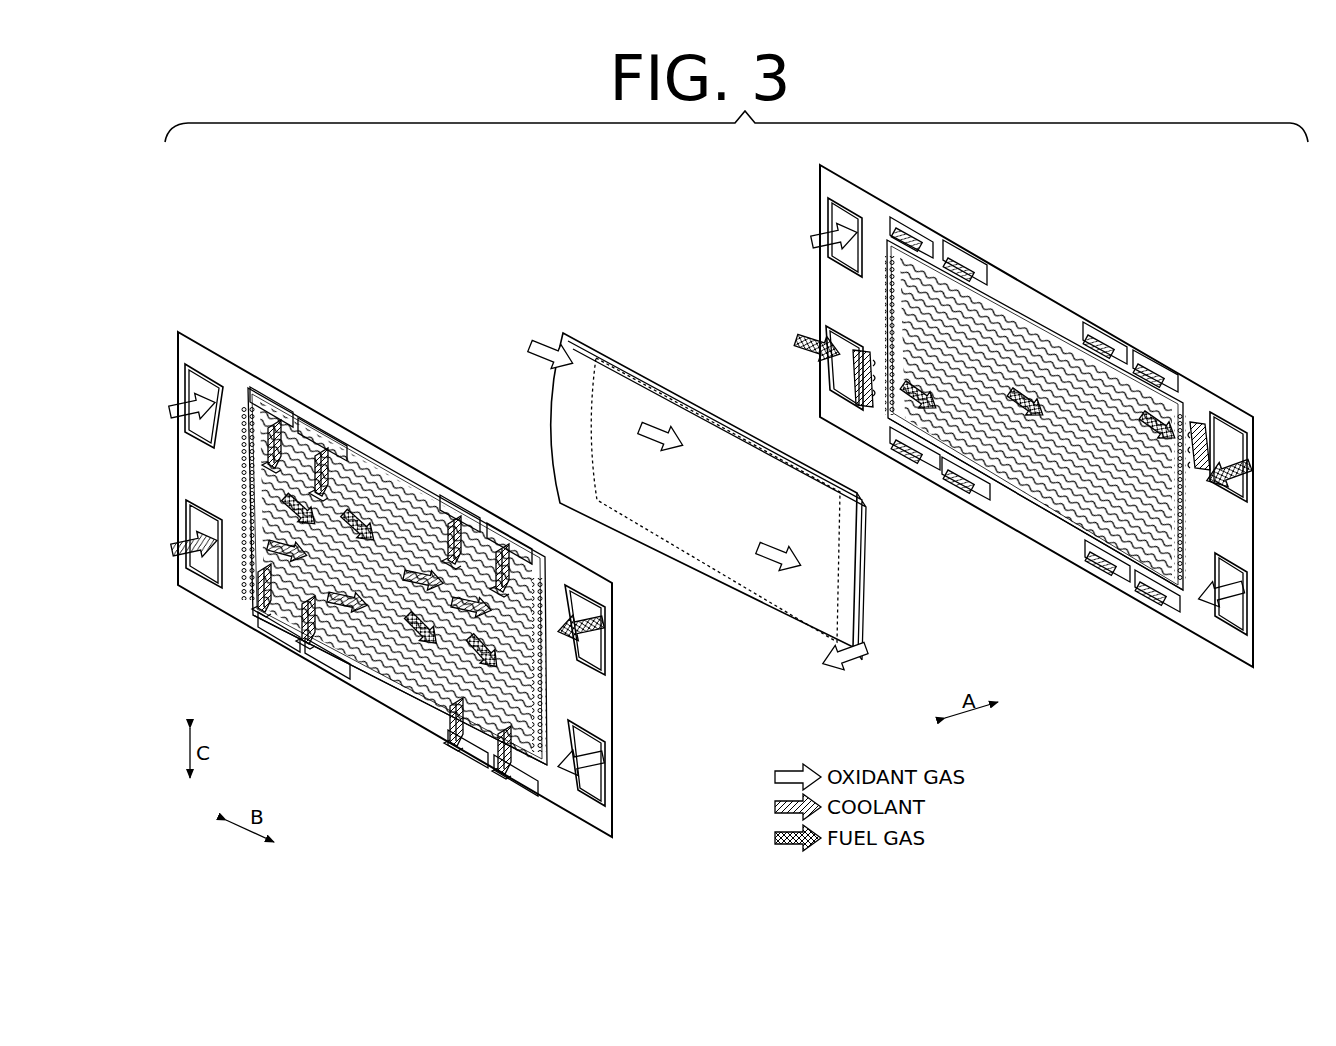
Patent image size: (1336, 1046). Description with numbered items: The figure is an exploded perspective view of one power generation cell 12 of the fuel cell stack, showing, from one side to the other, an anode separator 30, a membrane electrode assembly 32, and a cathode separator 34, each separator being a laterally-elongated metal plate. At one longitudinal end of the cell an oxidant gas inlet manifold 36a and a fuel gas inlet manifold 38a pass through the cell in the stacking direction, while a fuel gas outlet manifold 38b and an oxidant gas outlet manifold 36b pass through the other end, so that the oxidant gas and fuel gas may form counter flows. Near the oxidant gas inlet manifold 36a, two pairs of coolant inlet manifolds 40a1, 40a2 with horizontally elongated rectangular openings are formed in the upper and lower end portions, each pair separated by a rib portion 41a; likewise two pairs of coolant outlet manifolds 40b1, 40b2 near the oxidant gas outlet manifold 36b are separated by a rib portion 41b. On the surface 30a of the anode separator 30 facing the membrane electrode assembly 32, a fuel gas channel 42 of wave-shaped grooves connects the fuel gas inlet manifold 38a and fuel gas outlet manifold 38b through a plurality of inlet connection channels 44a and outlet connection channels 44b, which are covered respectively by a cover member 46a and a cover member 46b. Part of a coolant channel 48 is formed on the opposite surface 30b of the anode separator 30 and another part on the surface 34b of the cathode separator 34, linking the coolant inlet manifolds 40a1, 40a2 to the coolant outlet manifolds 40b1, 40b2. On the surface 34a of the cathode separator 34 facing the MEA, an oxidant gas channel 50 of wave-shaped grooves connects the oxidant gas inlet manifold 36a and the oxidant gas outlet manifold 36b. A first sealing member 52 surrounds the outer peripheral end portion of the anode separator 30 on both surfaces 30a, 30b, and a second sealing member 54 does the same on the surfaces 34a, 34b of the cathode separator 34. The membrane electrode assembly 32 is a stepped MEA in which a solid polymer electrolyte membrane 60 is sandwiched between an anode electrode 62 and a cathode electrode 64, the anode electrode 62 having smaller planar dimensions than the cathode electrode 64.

The power generation cell 12 is at (385, 273).
The anode separator 30 is at (818, 175).
The surface of the anode separator 30a is at (1245, 664).
The surface of the anode separator 30b is at (1256, 645).
The membrane electrode assembly 32 is at (566, 332).
The cathode separator 34 is at (182, 330).
The surface of the cathode separator 34a is at (608, 815).
The surface of the cathode separator 34b is at (578, 808).
The oxidant gas inlet manifold 36a is at (840, 220).
The oxidant gas outlet manifold 36b is at (1226, 636).
The fuel gas inlet manifold 38a is at (206, 568).
The fuel gas outlet manifold 38b is at (590, 650).
The coolant inlet manifold 40a1 is at (282, 420).
The coolant inlet manifold 40a2 is at (328, 445).
The coolant outlet manifold 40b1 is at (456, 516).
The coolant outlet manifold 40b2 is at (508, 545).
The rib portion 41a is at (300, 428).
The rib portion 41b is at (487, 515).
The fuel gas channel 42 is at (1012, 470).
The inlet connection channels 44a is at (858, 348).
The outlet connection channels 44b is at (1193, 425).
The cover member 46a is at (862, 410).
The cover member 46b is at (1210, 432).
The coolant channel 48 is at (365, 660).
The oxidant gas channel 50 is at (380, 615).
The first sealing member 52 is at (1065, 530).
The second sealing member 54 is at (423, 695).
The solid polymer electrolyte membrane 60 is at (613, 352).
The anode electrode 62 is at (710, 552).
The cathode electrode 64 is at (584, 362).